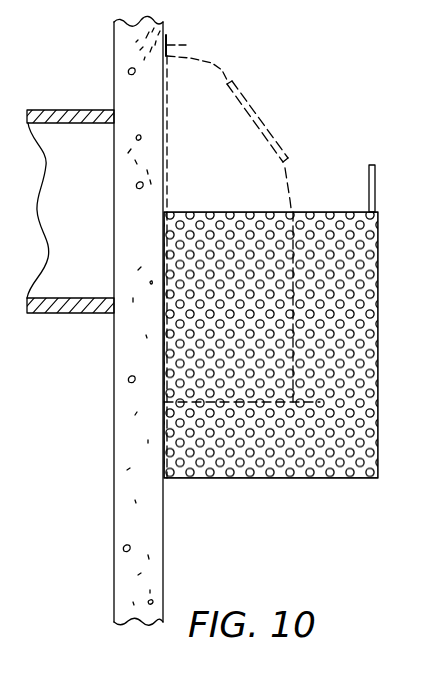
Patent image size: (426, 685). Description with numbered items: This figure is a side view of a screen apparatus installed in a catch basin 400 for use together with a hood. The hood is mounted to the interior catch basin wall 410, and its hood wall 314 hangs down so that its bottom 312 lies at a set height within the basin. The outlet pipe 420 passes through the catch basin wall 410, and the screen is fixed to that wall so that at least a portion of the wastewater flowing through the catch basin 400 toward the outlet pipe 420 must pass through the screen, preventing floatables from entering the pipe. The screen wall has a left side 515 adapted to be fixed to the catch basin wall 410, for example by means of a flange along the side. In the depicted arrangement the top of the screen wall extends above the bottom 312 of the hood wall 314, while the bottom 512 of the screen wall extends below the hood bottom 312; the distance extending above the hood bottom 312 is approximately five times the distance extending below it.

The catch basin 400 is at (295, 92).
The catch basin wall 410 is at (163, 27).
The hood wall 314 is at (285, 172).
The bottom of the hood wall 312 is at (257, 405).
The bottom of the screen wall 512 is at (268, 480).
The left side of the screen wall 515 is at (184, 480).
The outlet pipe 420 is at (80, 313).